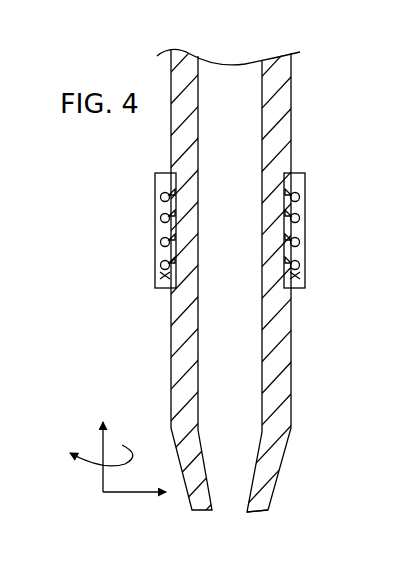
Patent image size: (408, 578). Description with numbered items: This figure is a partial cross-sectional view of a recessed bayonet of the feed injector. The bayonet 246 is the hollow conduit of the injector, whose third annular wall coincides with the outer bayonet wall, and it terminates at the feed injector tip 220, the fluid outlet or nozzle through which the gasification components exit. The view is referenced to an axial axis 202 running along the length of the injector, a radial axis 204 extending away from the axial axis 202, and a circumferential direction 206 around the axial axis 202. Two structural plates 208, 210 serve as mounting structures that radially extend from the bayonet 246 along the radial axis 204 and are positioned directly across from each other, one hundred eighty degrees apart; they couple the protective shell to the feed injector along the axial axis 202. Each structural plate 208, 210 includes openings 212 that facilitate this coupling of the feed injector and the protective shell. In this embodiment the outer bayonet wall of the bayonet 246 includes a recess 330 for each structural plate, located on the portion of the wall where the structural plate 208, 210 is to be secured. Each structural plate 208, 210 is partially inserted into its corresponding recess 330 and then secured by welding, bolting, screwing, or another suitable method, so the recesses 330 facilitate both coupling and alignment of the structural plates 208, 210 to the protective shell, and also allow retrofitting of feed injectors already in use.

The axial axis 202 is at (105, 452).
The radial axis 204 is at (128, 493).
The circumferential direction 206 is at (132, 466).
The structural plate 208 is at (167, 173).
The structural plate 210 is at (297, 173).
The openings 212 is at (160, 198).
The feed injector tip 220 is at (252, 500).
The bayonet 246 is at (308, 113).
The recess 330 is at (163, 273).